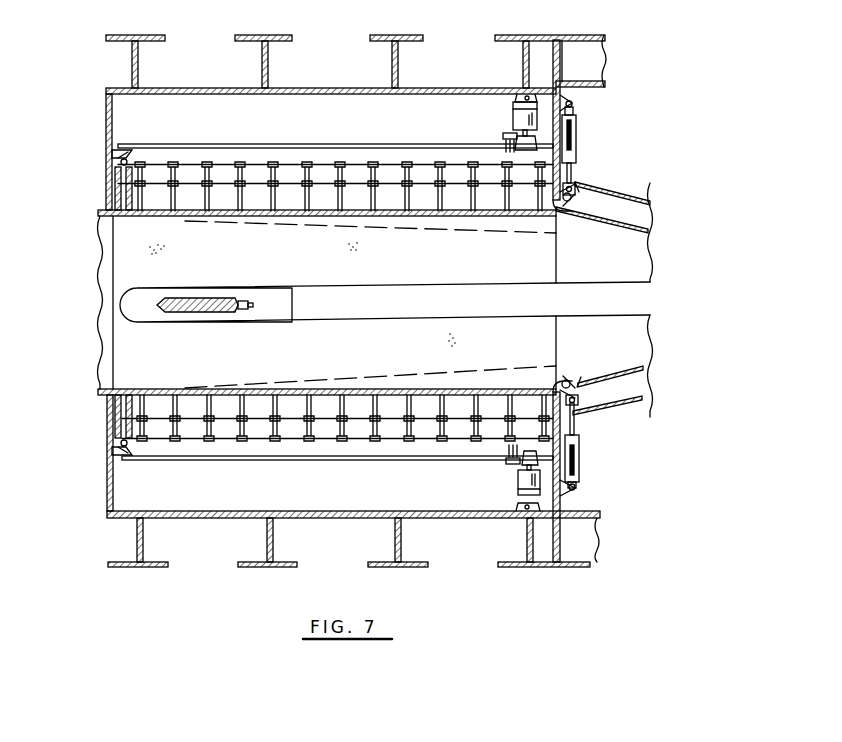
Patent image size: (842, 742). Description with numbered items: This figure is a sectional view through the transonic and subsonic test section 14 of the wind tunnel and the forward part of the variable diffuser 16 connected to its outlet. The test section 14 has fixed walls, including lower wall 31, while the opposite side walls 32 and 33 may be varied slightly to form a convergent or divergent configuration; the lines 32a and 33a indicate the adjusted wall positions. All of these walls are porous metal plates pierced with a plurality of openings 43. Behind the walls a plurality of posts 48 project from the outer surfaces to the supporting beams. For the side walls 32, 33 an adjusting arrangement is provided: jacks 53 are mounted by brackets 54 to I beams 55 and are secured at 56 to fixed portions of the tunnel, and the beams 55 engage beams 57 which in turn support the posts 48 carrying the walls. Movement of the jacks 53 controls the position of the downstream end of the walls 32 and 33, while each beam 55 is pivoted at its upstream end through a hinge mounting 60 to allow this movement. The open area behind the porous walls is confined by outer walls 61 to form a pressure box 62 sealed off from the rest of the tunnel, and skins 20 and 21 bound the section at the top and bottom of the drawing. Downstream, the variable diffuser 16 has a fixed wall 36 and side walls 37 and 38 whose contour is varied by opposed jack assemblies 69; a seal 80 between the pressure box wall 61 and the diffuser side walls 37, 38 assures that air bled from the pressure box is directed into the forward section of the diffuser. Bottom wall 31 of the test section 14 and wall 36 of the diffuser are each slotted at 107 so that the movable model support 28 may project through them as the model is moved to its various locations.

The transonic and subsonic test section 14 is at (114, 250).
The variable diffuser 16 is at (658, 231).
The upper skin 20 is at (100, 213).
The lower skin 21 is at (100, 395).
The movable support 28 is at (206, 300).
The lower wall 31 is at (540, 257).
The side wall 32 is at (454, 218).
The upper wall boundary 32a is at (492, 232).
The side wall 33 is at (303, 390).
The lower wall boundary 33a is at (490, 367).
The upper wall 36 is at (619, 321).
The side wall 37 is at (642, 229).
The side wall 38 is at (618, 373).
The openings 43 is at (348, 247).
The posts 48 is at (436, 203).
The jacks 53 is at (515, 113).
The brackets 54 is at (518, 135).
The I beams 55 is at (283, 147).
The securing point 56 is at (520, 88).
The beams 57 is at (403, 177).
The hinge mounting 60 is at (135, 149).
The outer walls 61 is at (356, 89).
The pressure box 62 is at (355, 493).
The jack assemblies 69 is at (577, 131).
The seal 80 is at (582, 184).
The slot 107 is at (347, 316).